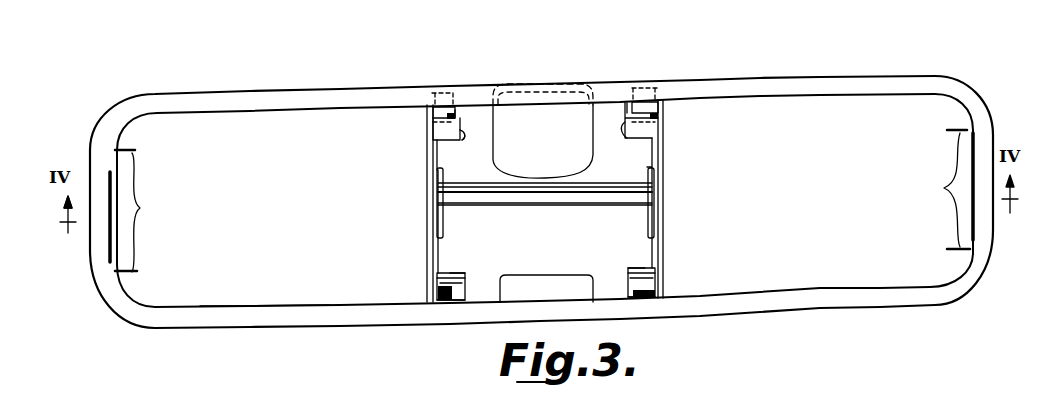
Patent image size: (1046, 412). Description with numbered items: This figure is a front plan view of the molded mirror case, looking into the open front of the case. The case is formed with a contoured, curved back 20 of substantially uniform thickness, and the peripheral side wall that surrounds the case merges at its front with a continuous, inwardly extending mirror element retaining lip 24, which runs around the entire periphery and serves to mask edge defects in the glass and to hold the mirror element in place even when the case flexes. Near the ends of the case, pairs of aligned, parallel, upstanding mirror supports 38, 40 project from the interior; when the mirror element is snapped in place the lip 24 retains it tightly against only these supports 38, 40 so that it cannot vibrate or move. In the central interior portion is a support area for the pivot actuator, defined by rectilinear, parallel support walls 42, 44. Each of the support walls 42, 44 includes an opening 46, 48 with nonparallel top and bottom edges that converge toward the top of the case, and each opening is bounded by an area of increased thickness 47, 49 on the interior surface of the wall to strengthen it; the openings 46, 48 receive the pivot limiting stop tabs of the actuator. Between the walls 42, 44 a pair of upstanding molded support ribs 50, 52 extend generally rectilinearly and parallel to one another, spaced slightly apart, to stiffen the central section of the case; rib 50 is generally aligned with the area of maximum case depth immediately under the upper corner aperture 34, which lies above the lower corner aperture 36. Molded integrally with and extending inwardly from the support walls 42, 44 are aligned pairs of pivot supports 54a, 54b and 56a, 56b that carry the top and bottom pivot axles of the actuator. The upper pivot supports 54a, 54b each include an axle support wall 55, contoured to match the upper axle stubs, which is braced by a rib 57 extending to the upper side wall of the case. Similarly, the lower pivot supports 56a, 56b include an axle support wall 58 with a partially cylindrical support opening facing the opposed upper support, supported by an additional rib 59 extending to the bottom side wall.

The case back 20 is at (824, 208).
The mirror element retaining lip 24 is at (245, 307).
The upper corner aperture 34 is at (499, 167).
The lower corner aperture 36 is at (560, 256).
The mirror support 38 is at (137, 211).
The mirror support 40 is at (942, 189).
The support wall 42 is at (428, 157).
The support wall 44 is at (665, 233).
The opening 46 is at (428, 222).
The area of increased thickness 47 is at (443, 230).
The opening 48 is at (660, 183).
The area of increased thickness 49 is at (646, 213).
The support rib 50 is at (597, 183).
The support rib 52 is at (520, 206).
The upper pivot support 54a is at (437, 122).
The upper pivot support 54b is at (660, 115).
The axle support wall 55 is at (464, 138).
The lower pivot support 56a is at (441, 288).
The lower pivot support 56b is at (646, 279).
The rib 57 is at (455, 110).
The axle support wall 58 is at (455, 276).
The rib 59 is at (458, 300).